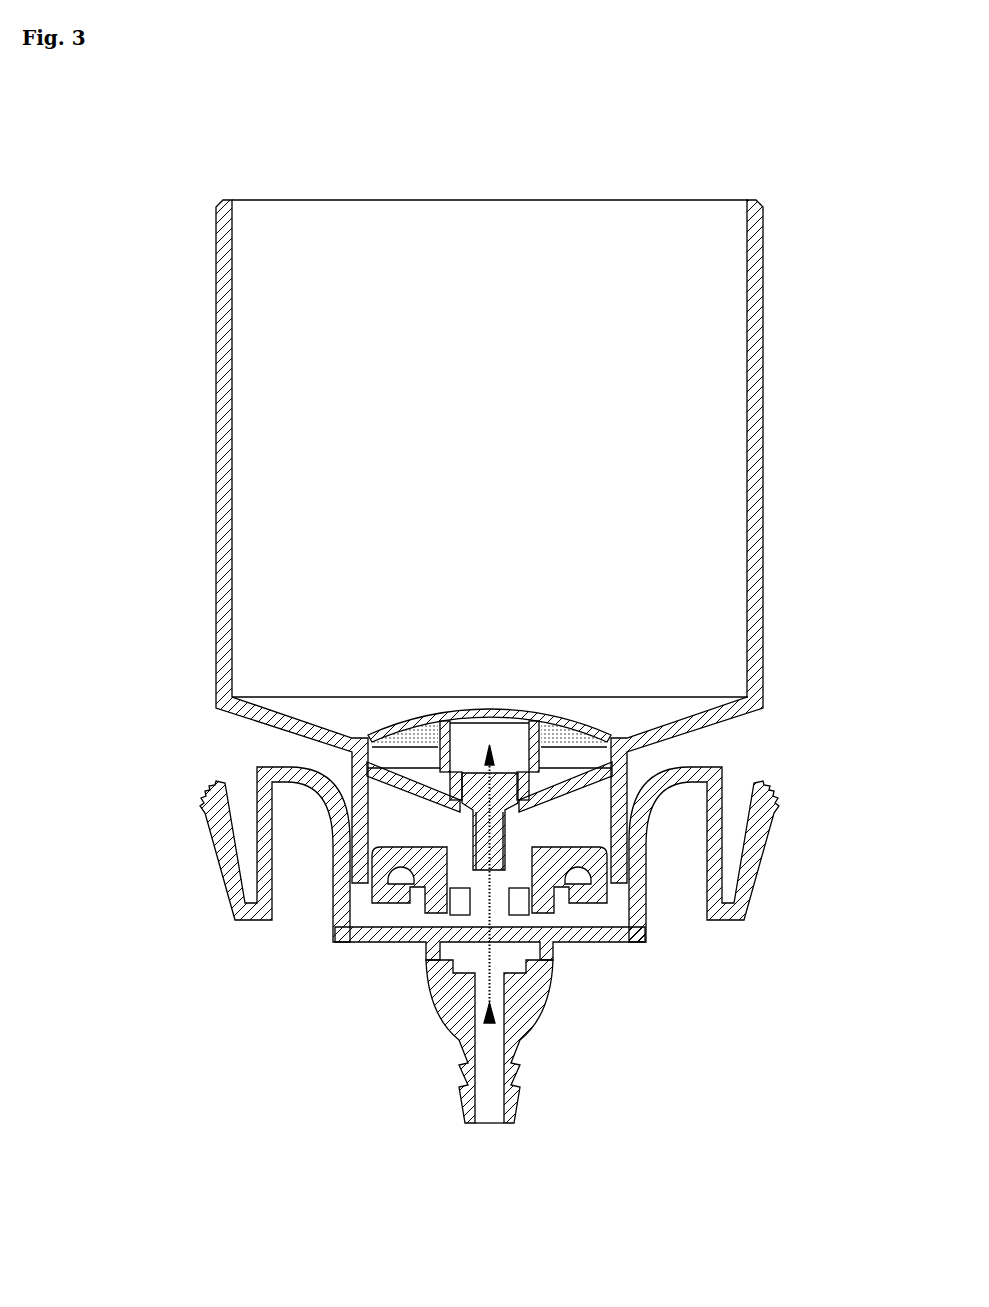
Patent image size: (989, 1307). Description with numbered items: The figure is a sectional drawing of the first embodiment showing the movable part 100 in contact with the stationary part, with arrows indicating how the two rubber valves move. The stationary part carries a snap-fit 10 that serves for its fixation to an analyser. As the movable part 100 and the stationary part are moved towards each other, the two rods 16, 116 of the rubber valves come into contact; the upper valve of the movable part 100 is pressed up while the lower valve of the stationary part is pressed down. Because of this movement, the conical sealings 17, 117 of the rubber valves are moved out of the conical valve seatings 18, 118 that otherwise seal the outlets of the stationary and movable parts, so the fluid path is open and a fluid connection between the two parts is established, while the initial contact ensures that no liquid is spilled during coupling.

The movable part 100 is at (763, 482).
The snap-fit 10 is at (208, 818).
The rod 16 is at (477, 918).
The conical sealing 17 is at (487, 897).
The conical valve seating 18 is at (520, 948).
The rod 116 is at (483, 847).
The conical sealing 117 is at (512, 800).
The conical valve seating 118 is at (463, 805).